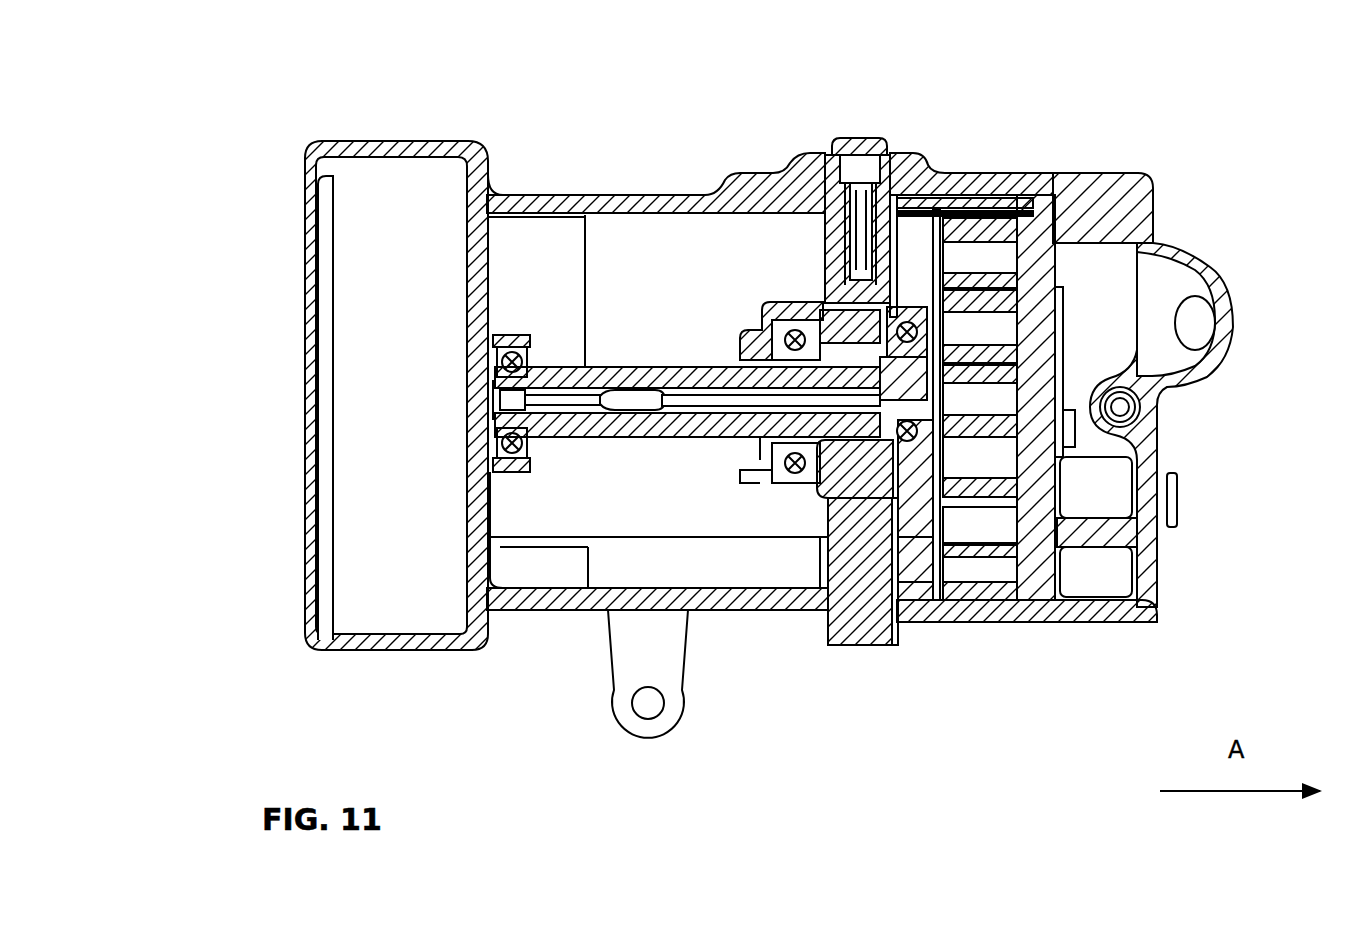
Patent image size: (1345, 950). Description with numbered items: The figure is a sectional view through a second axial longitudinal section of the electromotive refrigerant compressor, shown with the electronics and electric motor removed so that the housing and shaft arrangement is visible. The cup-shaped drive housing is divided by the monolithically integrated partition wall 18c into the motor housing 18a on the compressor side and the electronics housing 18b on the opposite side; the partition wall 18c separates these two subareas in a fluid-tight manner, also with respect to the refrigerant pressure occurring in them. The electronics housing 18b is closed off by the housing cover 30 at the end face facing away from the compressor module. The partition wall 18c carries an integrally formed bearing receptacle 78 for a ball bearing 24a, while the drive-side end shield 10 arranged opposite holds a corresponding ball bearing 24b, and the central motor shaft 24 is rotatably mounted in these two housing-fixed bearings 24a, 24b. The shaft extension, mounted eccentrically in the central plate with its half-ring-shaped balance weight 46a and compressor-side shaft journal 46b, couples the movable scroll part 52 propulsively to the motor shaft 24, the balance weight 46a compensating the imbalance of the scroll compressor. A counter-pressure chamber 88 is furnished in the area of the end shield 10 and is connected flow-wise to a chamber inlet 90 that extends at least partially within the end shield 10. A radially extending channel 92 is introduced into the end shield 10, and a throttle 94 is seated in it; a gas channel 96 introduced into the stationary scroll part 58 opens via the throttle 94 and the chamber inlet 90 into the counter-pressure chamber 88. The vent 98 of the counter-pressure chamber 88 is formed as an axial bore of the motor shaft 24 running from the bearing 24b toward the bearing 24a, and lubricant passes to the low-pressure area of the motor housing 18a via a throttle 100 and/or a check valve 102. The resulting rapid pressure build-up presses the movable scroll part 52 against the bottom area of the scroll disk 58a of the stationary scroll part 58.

The end shield 10 is at (862, 623).
The motor housing 18a is at (660, 500).
The electronics housing 18b is at (357, 545).
The partition wall 18c is at (478, 317).
The motor shaft 24 is at (716, 378).
The ball bearing 24a is at (507, 447).
The ball bearing 24b is at (780, 468).
The housing cover 30 is at (308, 213).
The balance weight 46a is at (853, 473).
The shaft journal 46b is at (900, 383).
The movable scroll part 52 is at (922, 517).
The stationary scroll part 58 is at (988, 588).
The scroll disk 58a is at (1023, 493).
The bearing receptacle 78 is at (513, 340).
The counter-pressure chamber 88 is at (847, 348).
The chamber inlet 90 is at (913, 320).
The channel 92 is at (855, 150).
The throttle 94 is at (862, 233).
The gas channel 96 is at (985, 213).
The vent 98 is at (680, 400).
The throttle 100 is at (580, 400).
The check valve 102 is at (562, 400).